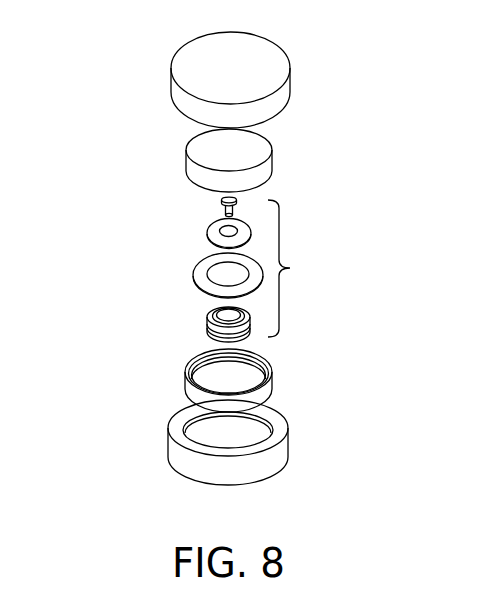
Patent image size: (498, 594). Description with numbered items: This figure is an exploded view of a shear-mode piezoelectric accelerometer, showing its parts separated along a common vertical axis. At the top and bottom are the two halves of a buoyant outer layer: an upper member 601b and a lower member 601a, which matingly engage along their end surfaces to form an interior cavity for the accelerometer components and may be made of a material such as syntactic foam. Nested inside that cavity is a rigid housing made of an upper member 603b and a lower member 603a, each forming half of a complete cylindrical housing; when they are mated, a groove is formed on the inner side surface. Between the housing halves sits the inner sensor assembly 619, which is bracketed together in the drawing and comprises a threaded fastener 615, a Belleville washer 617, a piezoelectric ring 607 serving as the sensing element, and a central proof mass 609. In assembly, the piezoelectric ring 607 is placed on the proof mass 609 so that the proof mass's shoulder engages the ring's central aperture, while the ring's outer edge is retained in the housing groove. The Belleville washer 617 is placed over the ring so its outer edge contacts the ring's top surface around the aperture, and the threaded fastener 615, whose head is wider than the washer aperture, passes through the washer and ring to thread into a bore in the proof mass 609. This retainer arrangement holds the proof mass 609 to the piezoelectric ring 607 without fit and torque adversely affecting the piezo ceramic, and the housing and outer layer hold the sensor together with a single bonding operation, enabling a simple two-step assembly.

The upper member of buoyant outer layer 601b is at (193, 63).
The upper member of rigid housing 603b is at (190, 152).
The threaded fastener 615 is at (222, 200).
The Belleville washer 617 is at (207, 229).
The piezoelectric ring 607 is at (193, 270).
The central proof mass 609 is at (208, 313).
The inner sensor assembly 619 is at (297, 268).
The lower member of rigid housing 603a is at (187, 367).
The lower member of buoyant outer layer 601a is at (177, 430).